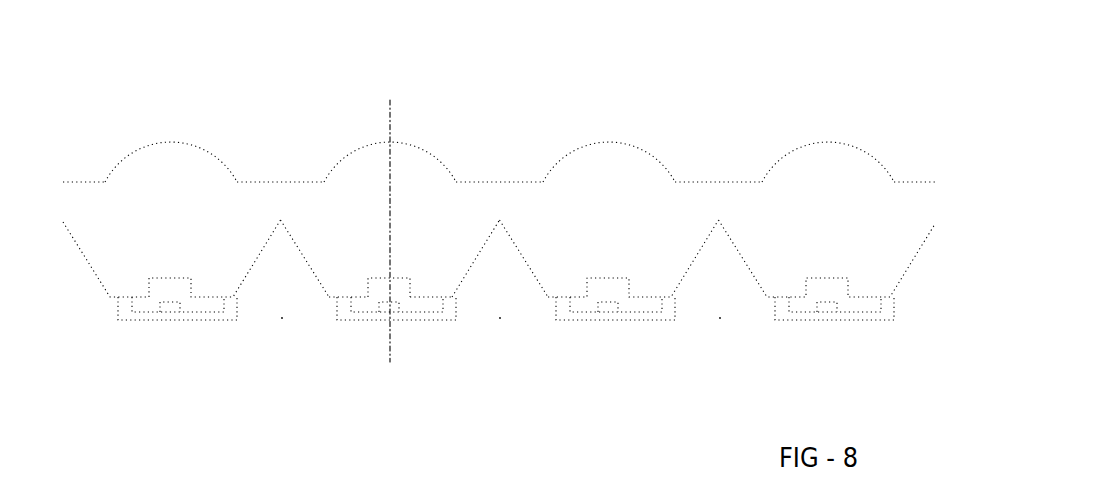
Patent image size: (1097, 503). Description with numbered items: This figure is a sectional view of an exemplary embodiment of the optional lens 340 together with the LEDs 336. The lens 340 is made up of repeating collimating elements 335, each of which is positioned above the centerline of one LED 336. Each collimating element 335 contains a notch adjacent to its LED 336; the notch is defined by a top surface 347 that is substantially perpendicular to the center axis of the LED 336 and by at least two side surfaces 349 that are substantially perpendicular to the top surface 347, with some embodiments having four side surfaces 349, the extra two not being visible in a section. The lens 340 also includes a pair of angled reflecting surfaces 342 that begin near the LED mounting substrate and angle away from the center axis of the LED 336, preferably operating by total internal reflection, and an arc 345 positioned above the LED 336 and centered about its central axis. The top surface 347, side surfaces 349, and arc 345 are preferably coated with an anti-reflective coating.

The collimating element 335 is at (775, 132).
The arc 345 is at (403, 142).
The angled reflecting surfaces 342 is at (300, 245).
The lens 340 is at (500, 230).
The side surfaces 349 is at (370, 288).
The top surface 347 is at (380, 277).
The LED 336 is at (397, 313).